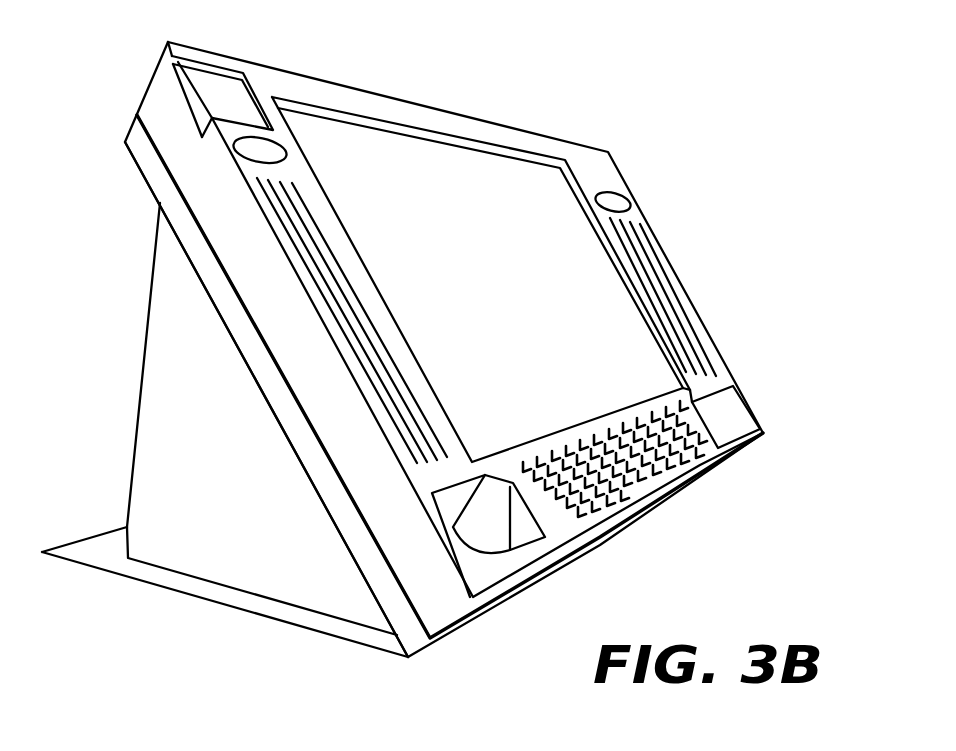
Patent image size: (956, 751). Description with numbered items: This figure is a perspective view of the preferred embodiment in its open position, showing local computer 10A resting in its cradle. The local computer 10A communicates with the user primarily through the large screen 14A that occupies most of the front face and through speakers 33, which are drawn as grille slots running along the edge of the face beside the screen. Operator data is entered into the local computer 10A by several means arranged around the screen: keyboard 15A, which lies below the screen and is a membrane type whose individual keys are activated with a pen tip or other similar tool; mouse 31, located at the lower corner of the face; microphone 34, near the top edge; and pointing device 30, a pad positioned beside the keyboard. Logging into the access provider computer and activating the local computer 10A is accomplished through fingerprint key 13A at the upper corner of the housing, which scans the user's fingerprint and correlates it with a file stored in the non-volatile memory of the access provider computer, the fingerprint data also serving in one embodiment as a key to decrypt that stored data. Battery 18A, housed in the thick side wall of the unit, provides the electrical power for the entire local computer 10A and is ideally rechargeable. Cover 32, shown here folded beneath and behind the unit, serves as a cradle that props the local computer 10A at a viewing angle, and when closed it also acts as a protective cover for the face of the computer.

The local computer 10A is at (385, 103).
The fingerprint key 13A is at (210, 97).
The screen 14A is at (455, 202).
The keyboard 15A is at (655, 477).
The battery 18A is at (168, 193).
The pointing device 30 is at (712, 412).
The mouse 31 is at (528, 537).
The cover 32 is at (218, 592).
The speakers 33 is at (678, 318).
The microphone 34 is at (627, 200).